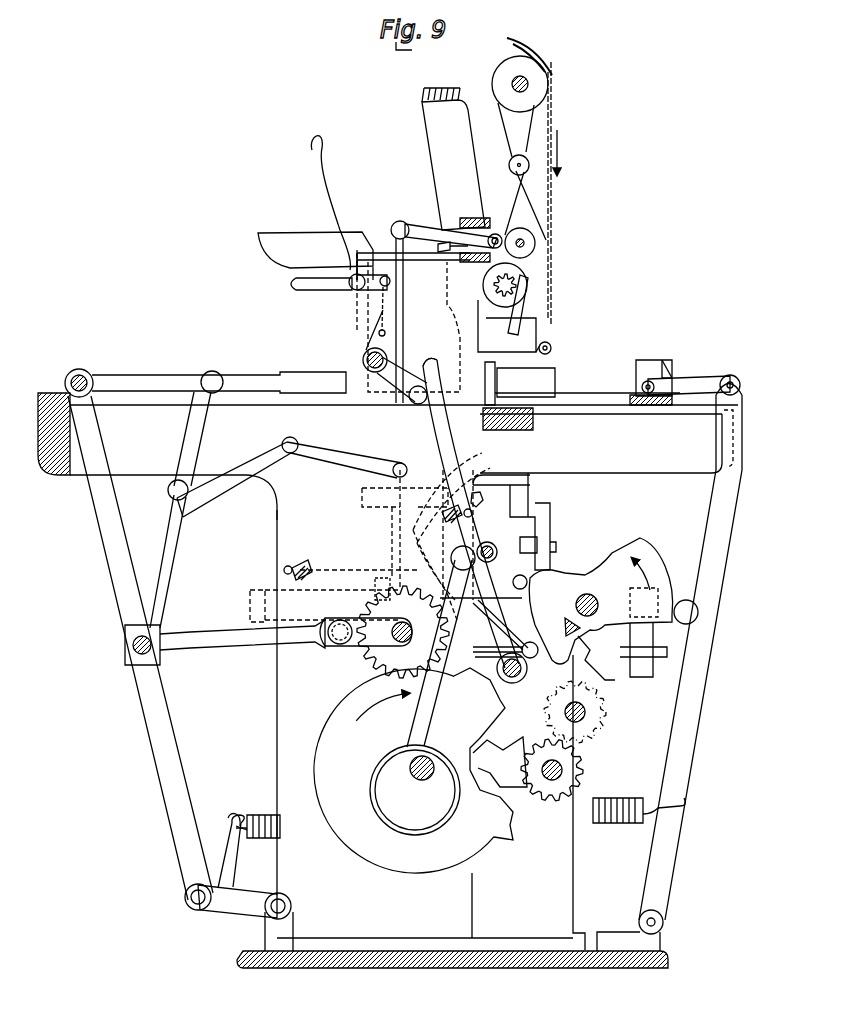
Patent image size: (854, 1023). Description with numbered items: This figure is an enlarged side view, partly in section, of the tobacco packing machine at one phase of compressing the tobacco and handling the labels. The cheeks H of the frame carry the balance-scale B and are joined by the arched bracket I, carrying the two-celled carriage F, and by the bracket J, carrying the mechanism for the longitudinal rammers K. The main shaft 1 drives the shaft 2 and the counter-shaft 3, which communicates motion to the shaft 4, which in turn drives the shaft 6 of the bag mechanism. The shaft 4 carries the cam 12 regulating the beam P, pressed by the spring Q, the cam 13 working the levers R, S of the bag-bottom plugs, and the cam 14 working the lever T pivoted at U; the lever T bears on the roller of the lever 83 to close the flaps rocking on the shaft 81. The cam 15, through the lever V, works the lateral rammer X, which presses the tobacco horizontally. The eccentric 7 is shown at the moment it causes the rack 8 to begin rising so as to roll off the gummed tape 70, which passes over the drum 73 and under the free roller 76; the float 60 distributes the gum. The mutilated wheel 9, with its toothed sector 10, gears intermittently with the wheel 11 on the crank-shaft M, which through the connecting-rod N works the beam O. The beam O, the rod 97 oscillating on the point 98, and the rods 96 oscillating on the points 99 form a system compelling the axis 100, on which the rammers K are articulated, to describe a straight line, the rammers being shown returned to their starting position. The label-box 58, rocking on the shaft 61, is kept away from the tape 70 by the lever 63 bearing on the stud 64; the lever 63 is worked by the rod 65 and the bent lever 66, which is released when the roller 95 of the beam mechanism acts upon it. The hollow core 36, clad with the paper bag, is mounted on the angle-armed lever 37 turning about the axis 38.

The main shaft 1 is at (565, 772).
The counter-shaft 3 is at (588, 714).
The shaft 4 is at (592, 608).
The shaft 6 is at (250, 603).
The eccentric 7 is at (400, 824).
The rack 8 is at (510, 327).
The mutilated wheel 9 is at (411, 776).
The toothed sector 10 is at (420, 770).
The wheel 11 is at (418, 604).
The cam 12 is at (653, 566).
The cam 13 is at (600, 609).
The cam 14 is at (560, 655).
The cam 15 is at (384, 596).
The hollow core 36 is at (546, 376).
The angle-armed lever 37 is at (530, 500).
The axis 38 is at (530, 484).
The label-box 58 is at (456, 175).
The float 60 is at (553, 537).
The shaft 61 is at (495, 233).
The lever 63 is at (428, 228).
The stud 64 is at (438, 247).
The rod 65 is at (404, 300).
The bent lever 66 is at (206, 492).
The endless tape 70 is at (503, 133).
The drum 73 is at (500, 76).
The free roller 76 is at (552, 348).
The shaft 81 is at (364, 358).
The lever 83 is at (408, 374).
The roller 95 is at (168, 490).
The rod 96 is at (203, 440).
The rod 97 is at (244, 905).
The point 98 is at (291, 906).
The point 99 is at (206, 369).
The axis 100 is at (81, 372).
The balance-scale B is at (315, 208).
The two-celled carriage F is at (646, 365).
The cheek H is at (301, 515).
The bracket I is at (507, 677).
The bracket J is at (259, 644).
The longitudinal rammer K is at (332, 384).
The crank-shaft M is at (368, 627).
The connecting-rod N is at (212, 646).
The beam O is at (162, 698).
The beam P is at (716, 528).
The spring Q is at (250, 840).
The lever R is at (518, 578).
The lever S is at (480, 628).
The lever T is at (445, 432).
The pivot U is at (497, 550).
The lever V is at (393, 535).
The lateral rammer X is at (453, 373).
The shaft 2 is at (314, 280).